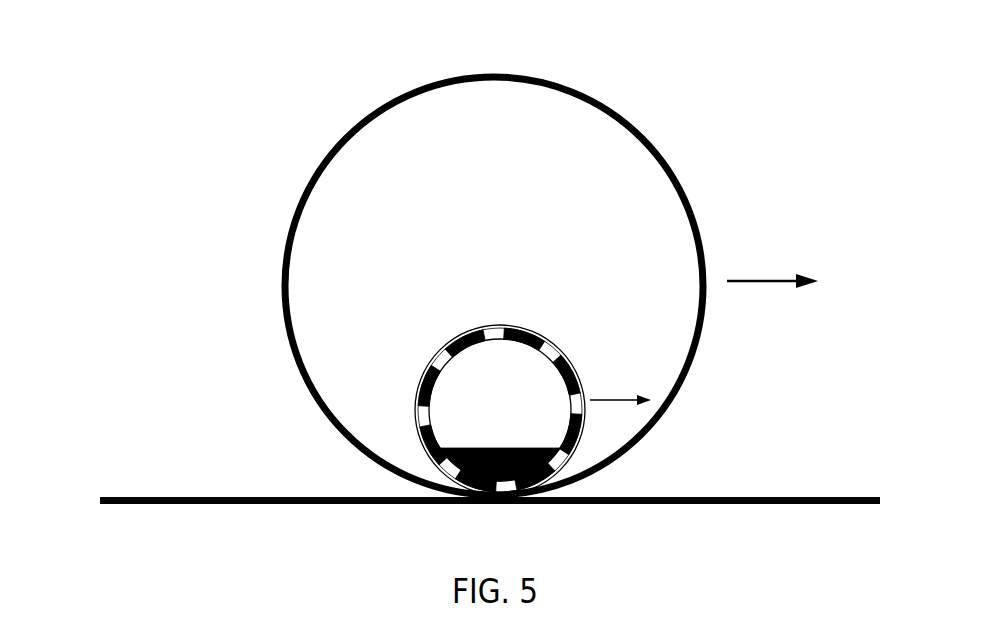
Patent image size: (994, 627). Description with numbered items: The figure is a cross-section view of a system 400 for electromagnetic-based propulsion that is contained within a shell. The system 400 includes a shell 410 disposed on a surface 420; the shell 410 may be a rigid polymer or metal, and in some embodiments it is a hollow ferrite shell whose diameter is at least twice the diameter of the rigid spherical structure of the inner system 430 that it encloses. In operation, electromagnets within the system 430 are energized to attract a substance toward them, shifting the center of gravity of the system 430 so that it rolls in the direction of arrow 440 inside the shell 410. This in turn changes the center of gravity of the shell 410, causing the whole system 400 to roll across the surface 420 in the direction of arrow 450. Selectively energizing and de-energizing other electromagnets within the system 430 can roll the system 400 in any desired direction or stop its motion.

The system 400 is at (150, 109).
The shell 410 is at (287, 243).
The surface 420 is at (185, 497).
The system 430 is at (420, 395).
The arrow 440 is at (626, 400).
The arrow 450 is at (762, 280).